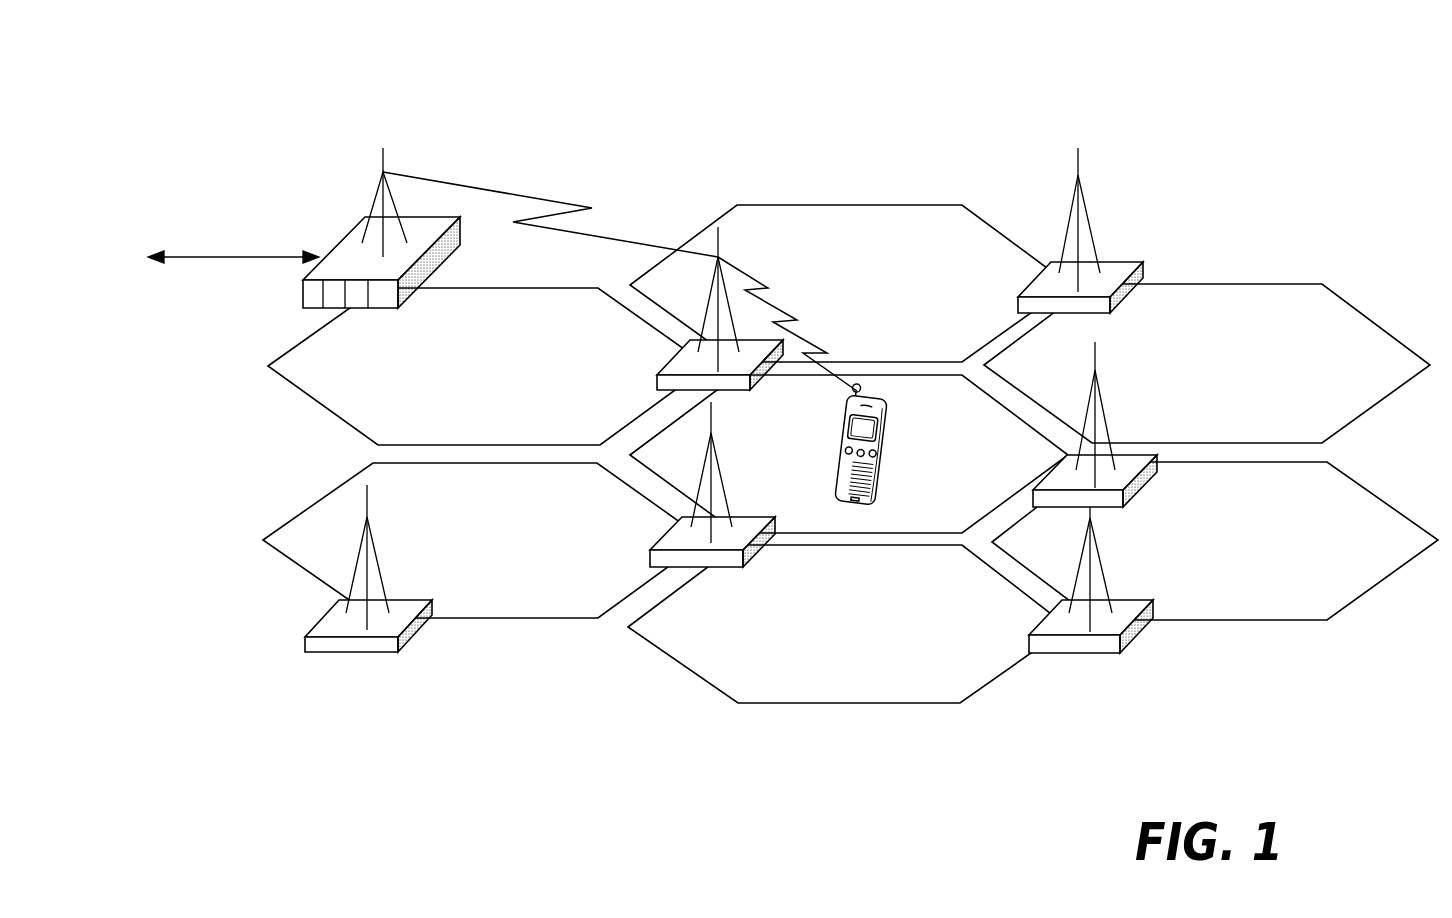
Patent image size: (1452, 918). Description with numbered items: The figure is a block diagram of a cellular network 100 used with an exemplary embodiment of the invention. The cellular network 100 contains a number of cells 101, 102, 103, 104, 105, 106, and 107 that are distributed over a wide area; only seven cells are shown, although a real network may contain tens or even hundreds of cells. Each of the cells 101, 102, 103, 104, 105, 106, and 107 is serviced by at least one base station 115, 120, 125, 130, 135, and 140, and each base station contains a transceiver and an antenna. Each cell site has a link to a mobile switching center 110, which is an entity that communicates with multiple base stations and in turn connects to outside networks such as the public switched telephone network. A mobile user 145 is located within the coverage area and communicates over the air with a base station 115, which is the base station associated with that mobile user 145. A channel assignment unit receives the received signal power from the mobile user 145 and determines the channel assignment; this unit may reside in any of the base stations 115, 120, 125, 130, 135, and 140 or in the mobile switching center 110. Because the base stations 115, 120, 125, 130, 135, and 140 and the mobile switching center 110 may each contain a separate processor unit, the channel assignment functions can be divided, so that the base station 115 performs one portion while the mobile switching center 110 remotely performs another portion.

The cellular network 100 is at (1201, 54).
The cell 101 is at (789, 241).
The cell 102 is at (1308, 321).
The cell 103 is at (1299, 607).
The cell 104 is at (941, 520).
The cell 105 is at (934, 687).
The cell 106 is at (579, 602).
The cell 107 is at (433, 437).
The mobile switching center 110 is at (340, 252).
The base station 115 is at (677, 367).
The base station 120 is at (1120, 265).
The base station 125 is at (1125, 460).
The base station 130 is at (1123, 610).
The base station 135 is at (745, 525).
The base station 140 is at (332, 622).
The mobile user 145 is at (895, 407).